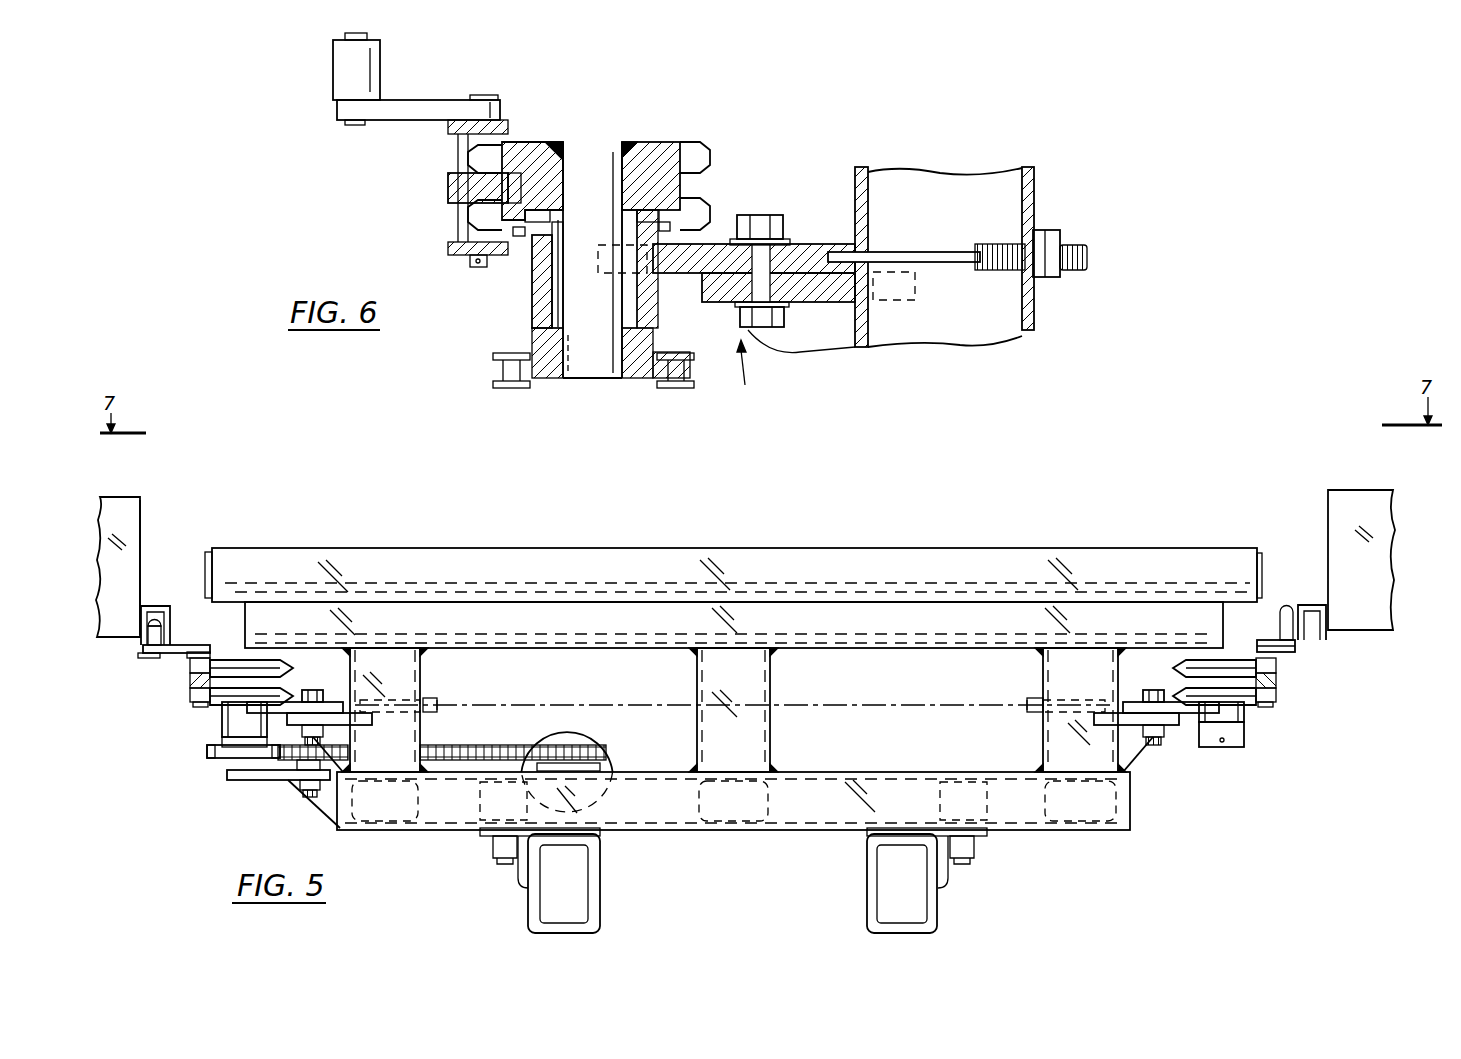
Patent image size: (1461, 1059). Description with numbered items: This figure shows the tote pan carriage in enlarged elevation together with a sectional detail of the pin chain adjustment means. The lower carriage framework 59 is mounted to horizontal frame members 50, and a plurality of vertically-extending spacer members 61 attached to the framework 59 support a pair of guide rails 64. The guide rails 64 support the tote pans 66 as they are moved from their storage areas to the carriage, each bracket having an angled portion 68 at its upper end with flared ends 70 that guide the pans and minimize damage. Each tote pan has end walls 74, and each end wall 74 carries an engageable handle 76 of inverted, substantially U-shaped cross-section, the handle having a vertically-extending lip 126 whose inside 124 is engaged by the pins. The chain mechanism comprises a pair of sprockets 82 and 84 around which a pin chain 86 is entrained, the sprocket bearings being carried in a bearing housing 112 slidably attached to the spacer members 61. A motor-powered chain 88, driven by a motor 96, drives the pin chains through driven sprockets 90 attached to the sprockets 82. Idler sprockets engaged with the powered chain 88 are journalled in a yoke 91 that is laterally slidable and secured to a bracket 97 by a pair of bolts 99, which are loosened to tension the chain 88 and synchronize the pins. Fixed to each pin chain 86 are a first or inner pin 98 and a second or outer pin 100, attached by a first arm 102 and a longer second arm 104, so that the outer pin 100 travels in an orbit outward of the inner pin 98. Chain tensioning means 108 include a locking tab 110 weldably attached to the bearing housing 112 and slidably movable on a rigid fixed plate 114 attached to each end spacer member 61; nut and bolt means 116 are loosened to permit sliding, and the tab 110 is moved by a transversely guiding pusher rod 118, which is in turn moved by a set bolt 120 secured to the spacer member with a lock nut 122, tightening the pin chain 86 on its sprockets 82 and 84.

In FIG. 6, the second or outer pin 100 is at (333, 68).
In FIG. 5, the second or outer pin 100 is at (143, 646).
In FIG. 6, the second arm 104 is at (337, 111).
In FIG. 5, the second arm 104 is at (147, 653).
In FIG. 6, the pin chain 86 is at (448, 189).
In FIG. 5, the pin chain 86 is at (190, 681).
In FIG. 6, the sprocket 82 is at (703, 196).
In FIG. 5, the sprocket 82 is at (233, 695).
In FIG. 6, the nut and bolt means 116 is at (772, 214).
In FIG. 5, the nut and bolt means 116 is at (312, 690).
In FIG. 6, the pusher rod 118 is at (903, 250).
In FIG. 6, the lock nut 122 is at (1047, 229).
In FIG. 5, the lock nut 122 is at (430, 698).
In FIG. 6, the set bolt 120 is at (1082, 243).
In FIG. 5, the set bolt 120 is at (440, 703).
In FIG. 6, the bearing housing 112 is at (535, 298).
In FIG. 5, the bearing housing 112 is at (1242, 728).
In FIG. 6, the locking tab 110 is at (683, 268).
In FIG. 6, the fixed plate 114 is at (720, 298).
In FIG. 6, the spacer member 61 is at (1037, 314).
In FIG. 5, the spacer member 61 is at (420, 729).
In FIG. 6, the driven sprocket 90 is at (508, 368).
In FIG. 5, the driven sprocket 90 is at (207, 751).
In FIG. 6, the chain tensioning means 108 is at (748, 375).
In FIG. 5, the tote pan 66 is at (148, 468).
In FIG. 5, the end wall 74 is at (142, 508).
In FIG. 5, the flared end 70 is at (212, 552).
In FIG. 5, the engageable handle 76 is at (153, 610).
In FIG. 5, the inside of the lip 124 is at (163, 620).
In FIG. 5, the lip 126 is at (170, 631).
In FIG. 5, the motor-powered chain 88 is at (205, 762).
In FIG. 5, the yoke 91 is at (227, 779).
In FIG. 5, the bracket 97 is at (293, 783).
In FIG. 5, the bolts 99 is at (313, 792).
In FIG. 5, the motor 96 is at (607, 762).
In FIG. 5, the horizontal frame member 50 is at (601, 920).
In FIG. 5, the angled portion 68 is at (1122, 624).
In FIG. 5, the guide rail 64 is at (1263, 565).
In FIG. 5, the first or inner pin 98 is at (1297, 636).
In FIG. 5, the first arm 102 is at (1297, 648).
In FIG. 5, the sprocket 84 is at (1250, 690).
In FIG. 5, the lower carriage framework 59 is at (1133, 802).